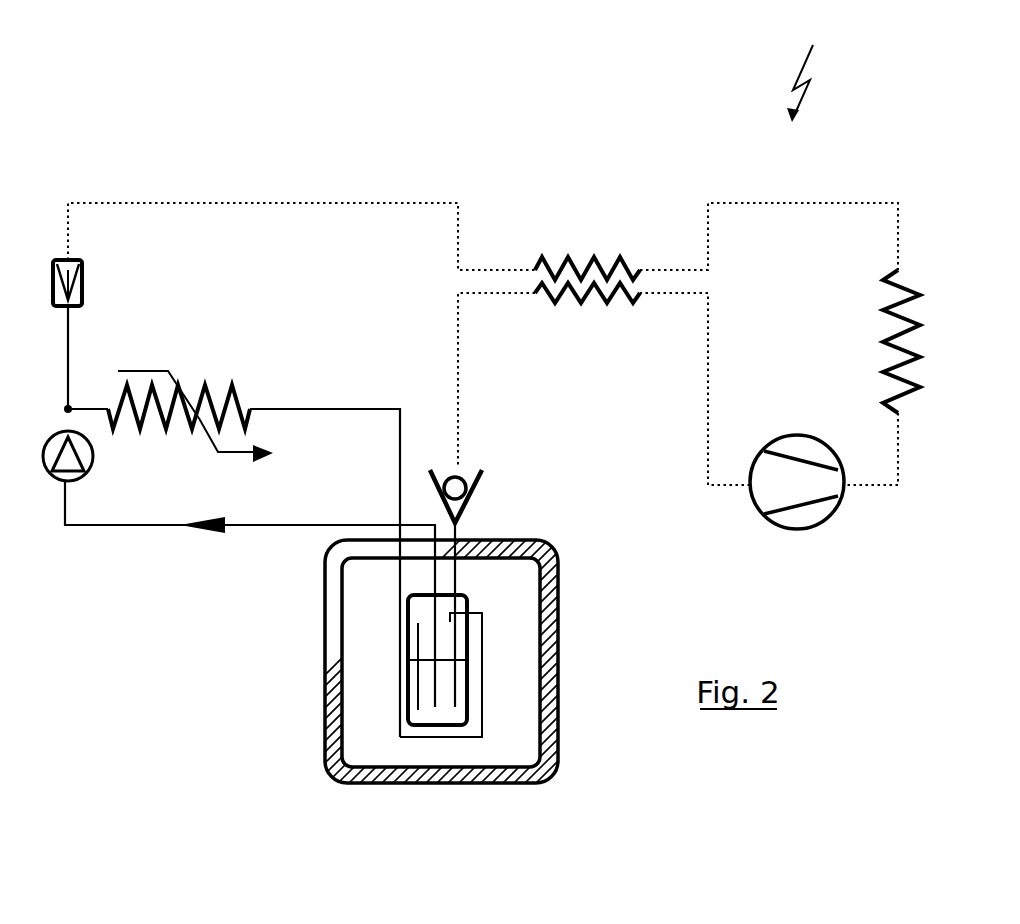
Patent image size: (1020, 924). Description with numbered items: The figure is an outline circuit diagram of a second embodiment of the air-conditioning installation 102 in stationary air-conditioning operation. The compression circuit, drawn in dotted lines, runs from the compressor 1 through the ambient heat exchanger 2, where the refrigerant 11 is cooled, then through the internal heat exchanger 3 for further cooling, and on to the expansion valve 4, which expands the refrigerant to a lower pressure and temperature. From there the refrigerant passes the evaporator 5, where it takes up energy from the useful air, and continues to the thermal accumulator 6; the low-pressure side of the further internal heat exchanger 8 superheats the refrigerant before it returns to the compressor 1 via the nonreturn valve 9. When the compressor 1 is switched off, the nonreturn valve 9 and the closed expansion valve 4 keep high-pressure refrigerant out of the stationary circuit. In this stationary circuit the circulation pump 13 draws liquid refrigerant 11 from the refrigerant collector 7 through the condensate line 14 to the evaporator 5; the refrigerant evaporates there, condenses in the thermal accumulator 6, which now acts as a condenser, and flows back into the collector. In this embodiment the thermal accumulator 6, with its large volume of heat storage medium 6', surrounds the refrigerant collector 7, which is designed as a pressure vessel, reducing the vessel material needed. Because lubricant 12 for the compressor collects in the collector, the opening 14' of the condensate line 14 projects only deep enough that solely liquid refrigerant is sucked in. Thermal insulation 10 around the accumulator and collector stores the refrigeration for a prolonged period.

The compressor 1 is at (800, 528).
The ambient heat exchanger 2 is at (887, 315).
The internal heat exchanger 3 is at (573, 258).
The expansion valve 4 is at (83, 263).
The evaporator 5 is at (178, 393).
The thermal accumulator 6 is at (548, 650).
The heat storage medium 6' is at (567, 531).
The refrigerant collector 7 is at (410, 683).
The further internal heat exchanger 8 is at (613, 297).
The nonreturn valve 9 is at (482, 482).
The thermal insulation 10 is at (550, 778).
The refrigerant 11 is at (447, 695).
The lubricant 12 is at (452, 722).
The circulation pump 13 is at (58, 480).
The condensate line 14 is at (250, 593).
The opening of the condensate line 14' is at (331, 742).
The air-conditioning installation 102 is at (816, 68).